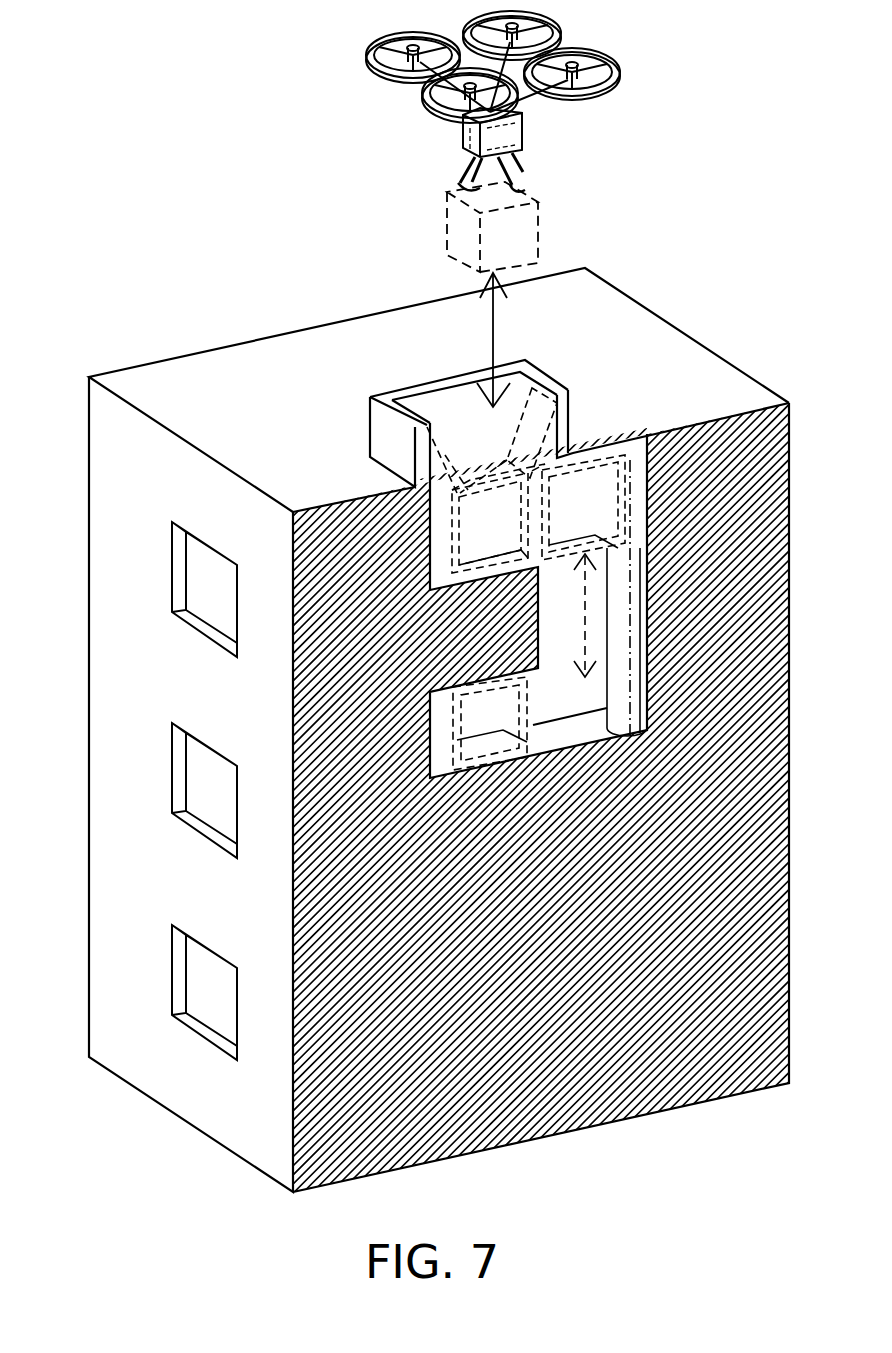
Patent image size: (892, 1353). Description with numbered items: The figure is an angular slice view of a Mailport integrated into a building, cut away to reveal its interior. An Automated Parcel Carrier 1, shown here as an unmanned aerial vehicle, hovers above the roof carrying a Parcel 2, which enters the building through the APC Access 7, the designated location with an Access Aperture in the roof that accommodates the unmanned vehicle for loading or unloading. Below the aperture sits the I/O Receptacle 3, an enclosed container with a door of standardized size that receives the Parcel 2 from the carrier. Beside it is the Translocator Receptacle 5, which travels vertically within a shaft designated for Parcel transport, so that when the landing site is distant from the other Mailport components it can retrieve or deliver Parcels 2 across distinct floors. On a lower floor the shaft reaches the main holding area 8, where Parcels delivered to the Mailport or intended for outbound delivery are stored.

The Automated Parcel Carrier 1 is at (366, 63).
The Parcel 2 is at (492, 227).
The Inbound/Outbound receptacle 3 is at (498, 518).
The Translocator Receptacle 5 is at (583, 507).
The APC Access 7 is at (485, 455).
The main holding area 8 is at (490, 723).